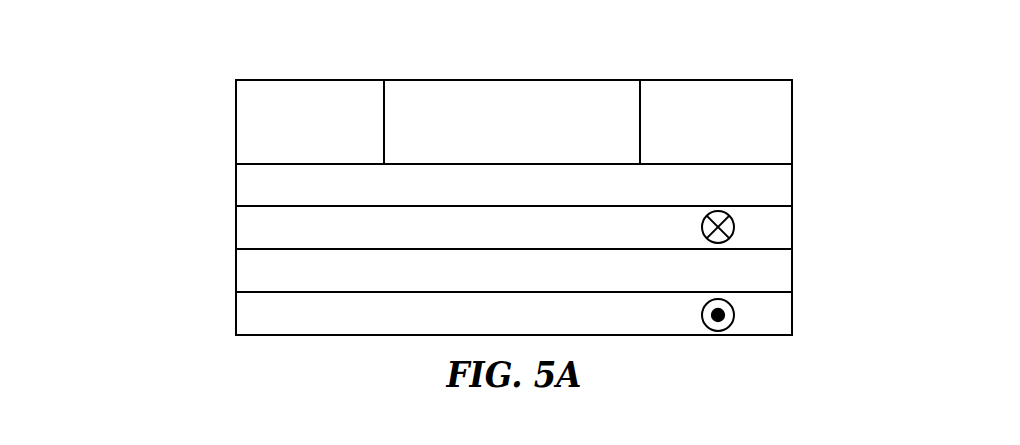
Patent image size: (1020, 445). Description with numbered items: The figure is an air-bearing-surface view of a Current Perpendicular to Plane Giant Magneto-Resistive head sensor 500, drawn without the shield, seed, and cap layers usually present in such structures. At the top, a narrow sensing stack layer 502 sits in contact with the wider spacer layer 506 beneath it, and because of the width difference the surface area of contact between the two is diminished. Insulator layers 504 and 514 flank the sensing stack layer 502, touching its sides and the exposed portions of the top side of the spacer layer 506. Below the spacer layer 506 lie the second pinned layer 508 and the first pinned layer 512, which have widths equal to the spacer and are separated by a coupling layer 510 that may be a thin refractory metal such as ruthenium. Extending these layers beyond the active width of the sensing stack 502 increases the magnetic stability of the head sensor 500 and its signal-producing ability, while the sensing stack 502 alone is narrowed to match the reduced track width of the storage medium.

The CPP GMR head sensor 500 is at (114, 345).
The sensing stack layer 502 is at (428, 97).
The insulator layer 504 is at (778, 140).
The spacer layer 506 is at (778, 184).
The second pinned layer 508 is at (778, 227).
The coupling layer 510 is at (778, 270).
The first pinned layer 512 is at (778, 312).
The insulator layer 514 is at (247, 142).